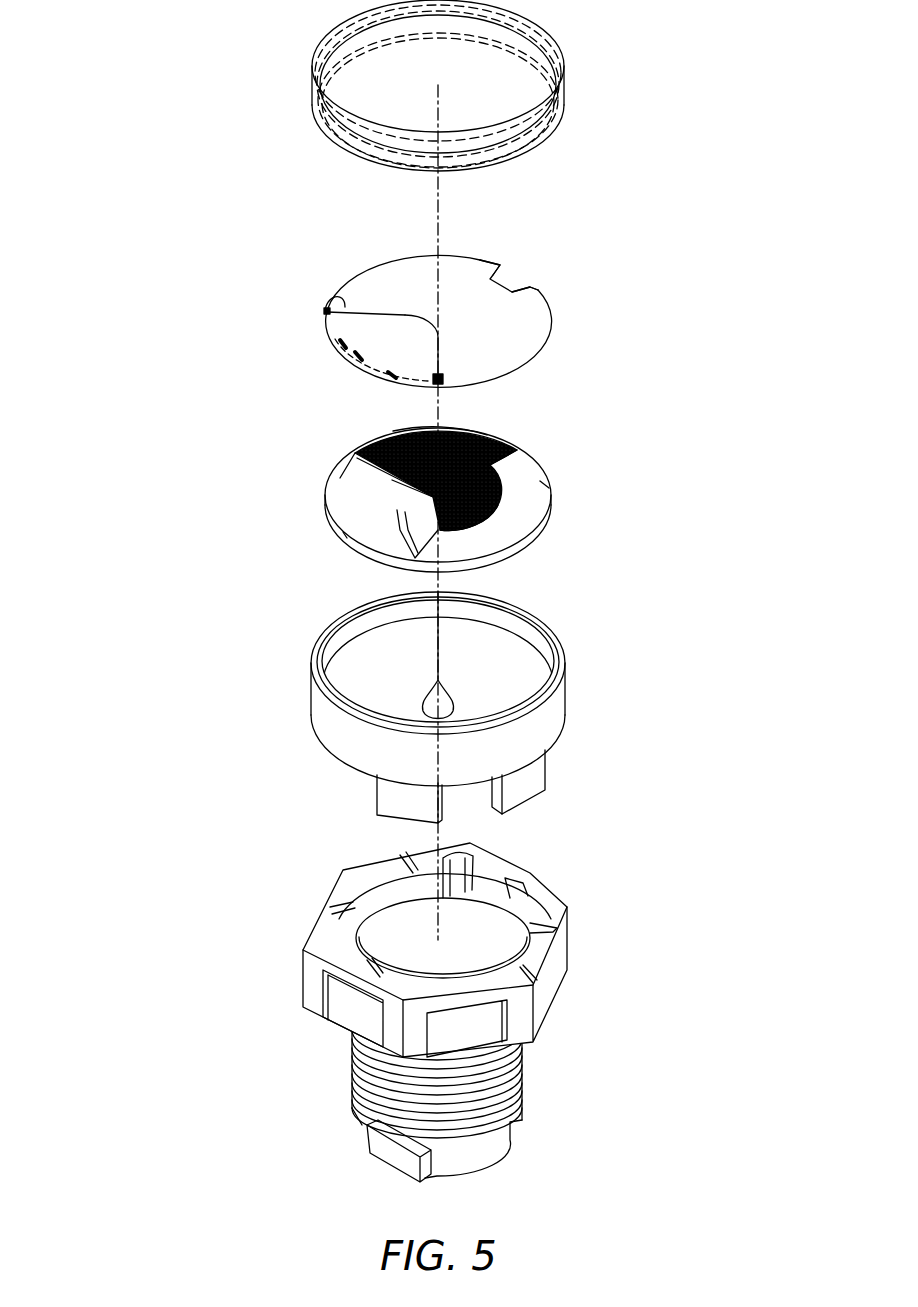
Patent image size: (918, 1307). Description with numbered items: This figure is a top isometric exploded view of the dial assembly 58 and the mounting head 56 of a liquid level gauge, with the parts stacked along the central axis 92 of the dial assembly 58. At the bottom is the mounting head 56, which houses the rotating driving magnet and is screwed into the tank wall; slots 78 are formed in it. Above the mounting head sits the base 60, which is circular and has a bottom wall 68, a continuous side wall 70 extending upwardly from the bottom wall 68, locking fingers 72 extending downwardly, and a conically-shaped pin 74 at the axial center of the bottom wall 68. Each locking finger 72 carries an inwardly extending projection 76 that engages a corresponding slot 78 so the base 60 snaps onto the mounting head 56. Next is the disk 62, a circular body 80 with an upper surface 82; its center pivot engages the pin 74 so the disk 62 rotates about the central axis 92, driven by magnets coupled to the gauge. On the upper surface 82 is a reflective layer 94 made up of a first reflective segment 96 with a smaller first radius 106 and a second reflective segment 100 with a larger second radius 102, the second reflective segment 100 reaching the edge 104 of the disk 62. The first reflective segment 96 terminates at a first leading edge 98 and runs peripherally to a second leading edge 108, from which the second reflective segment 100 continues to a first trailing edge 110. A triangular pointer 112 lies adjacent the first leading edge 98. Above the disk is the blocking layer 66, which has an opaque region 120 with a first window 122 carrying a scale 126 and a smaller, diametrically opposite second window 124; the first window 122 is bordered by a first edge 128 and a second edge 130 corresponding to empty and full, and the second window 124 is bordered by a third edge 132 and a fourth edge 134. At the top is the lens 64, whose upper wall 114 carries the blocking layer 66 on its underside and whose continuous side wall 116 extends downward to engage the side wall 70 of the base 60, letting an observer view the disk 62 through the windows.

The mounting head 56 is at (426, 1012).
The dial assembly 58 is at (108, 228).
The base 60 is at (431, 718).
The disk 62 is at (442, 511).
The lens 64 is at (430, 85).
The blocking layer 66 is at (438, 312).
The bottom wall 68 is at (347, 690).
The side wall 70 is at (322, 711).
The locking fingers 72 is at (461, 797).
The pin 74 is at (430, 690).
The projection 76 is at (492, 800).
The slot 78 is at (340, 1023).
The body 80 is at (340, 478).
The upper surface 82 is at (540, 481).
The central axis 92 is at (443, 186).
The reflective layer 94 is at (390, 432).
The first reflective segment 96 is at (493, 508).
The first leading edge 98 is at (430, 570).
The second reflective segment 100 is at (480, 430).
The second radius 102 is at (392, 480).
The edge 104 is at (343, 532).
The first radius 106 is at (410, 560).
The second leading edge 108 is at (520, 453).
The first trailing edge 110 is at (353, 458).
The pointer 112 is at (440, 545).
The upper wall 114 is at (537, 33).
The side wall 116 is at (548, 120).
The opaque region 120 is at (527, 337).
The first window 122 is at (336, 342).
The second window 124 is at (513, 282).
The scale 126 is at (328, 333).
The first edge 128 is at (440, 378).
The second edge 130 is at (345, 282).
The third edge 132 is at (500, 265).
The fourth edge 134 is at (542, 291).